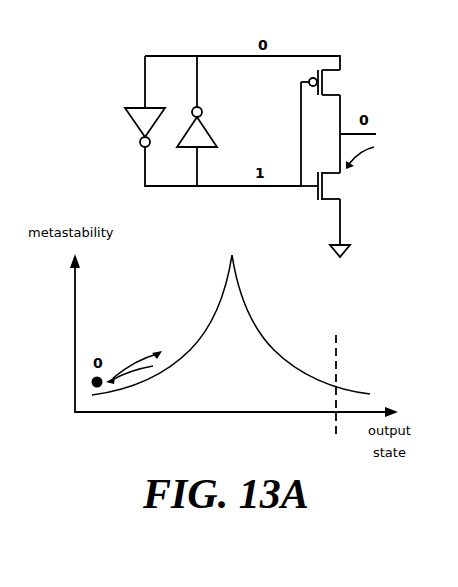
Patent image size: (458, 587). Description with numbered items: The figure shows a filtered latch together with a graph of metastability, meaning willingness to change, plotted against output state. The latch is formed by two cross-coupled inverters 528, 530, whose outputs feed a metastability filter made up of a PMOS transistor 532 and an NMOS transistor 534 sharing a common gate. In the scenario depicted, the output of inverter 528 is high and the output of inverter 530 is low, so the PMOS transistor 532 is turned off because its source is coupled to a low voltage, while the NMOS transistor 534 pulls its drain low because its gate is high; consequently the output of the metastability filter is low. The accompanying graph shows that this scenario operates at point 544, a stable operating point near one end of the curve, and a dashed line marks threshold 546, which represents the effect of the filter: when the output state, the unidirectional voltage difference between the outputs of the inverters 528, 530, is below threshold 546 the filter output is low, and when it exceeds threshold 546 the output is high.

The inverter 528 is at (137, 127).
The inverter 530 is at (205, 126).
The PMOS transistor 532 is at (327, 93).
The NMOS transistor 534 is at (334, 197).
The point 544 is at (91, 380).
The threshold 546 is at (339, 371).